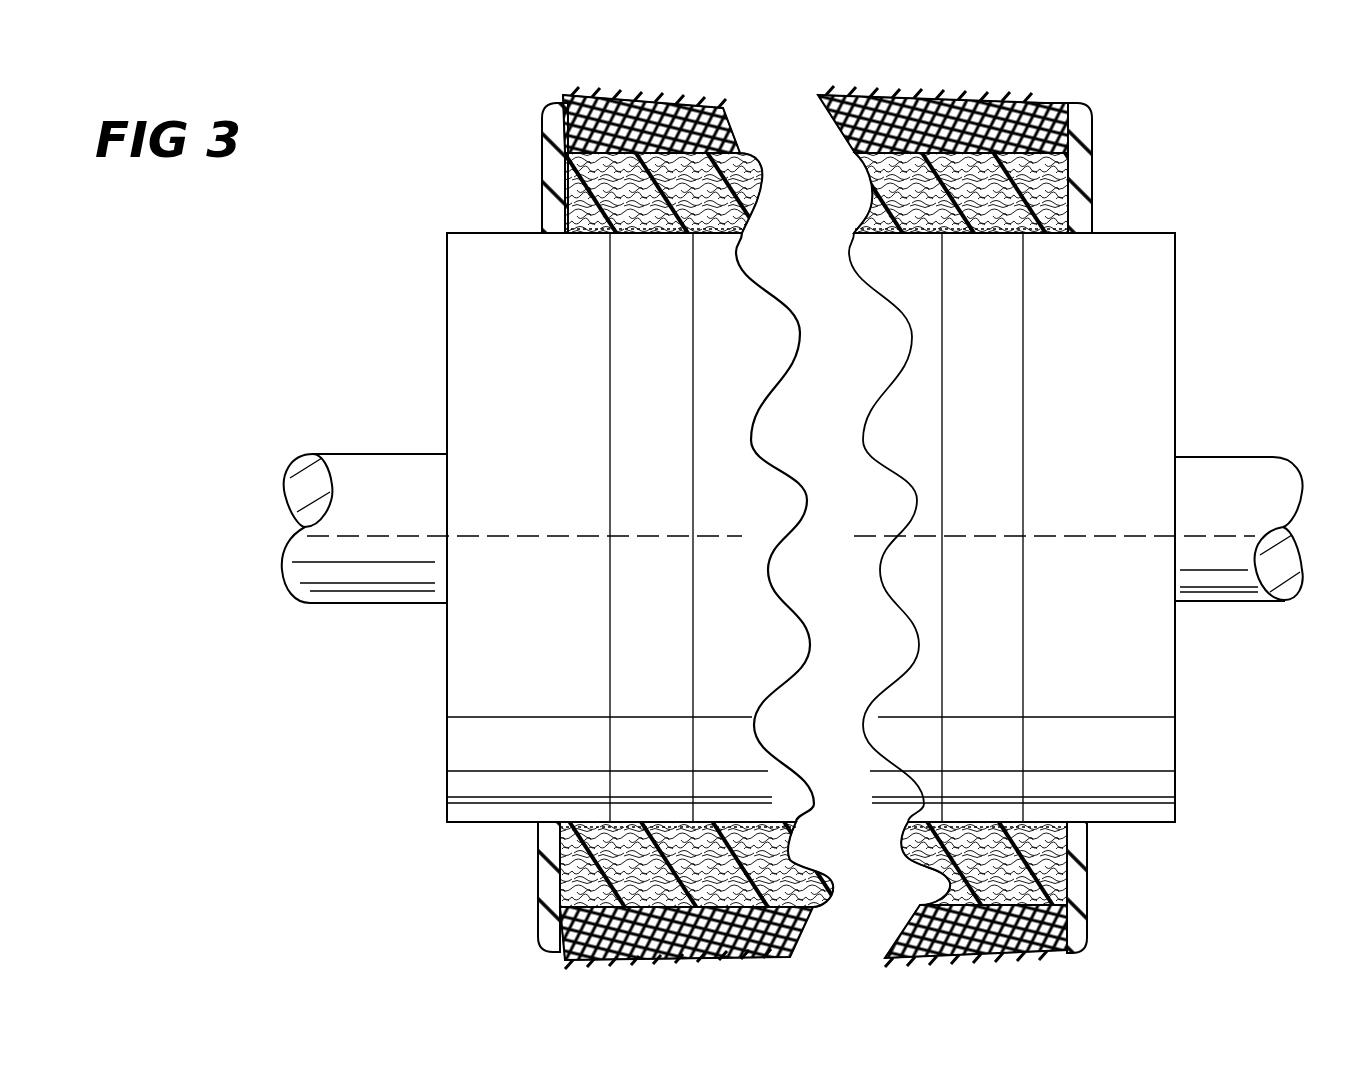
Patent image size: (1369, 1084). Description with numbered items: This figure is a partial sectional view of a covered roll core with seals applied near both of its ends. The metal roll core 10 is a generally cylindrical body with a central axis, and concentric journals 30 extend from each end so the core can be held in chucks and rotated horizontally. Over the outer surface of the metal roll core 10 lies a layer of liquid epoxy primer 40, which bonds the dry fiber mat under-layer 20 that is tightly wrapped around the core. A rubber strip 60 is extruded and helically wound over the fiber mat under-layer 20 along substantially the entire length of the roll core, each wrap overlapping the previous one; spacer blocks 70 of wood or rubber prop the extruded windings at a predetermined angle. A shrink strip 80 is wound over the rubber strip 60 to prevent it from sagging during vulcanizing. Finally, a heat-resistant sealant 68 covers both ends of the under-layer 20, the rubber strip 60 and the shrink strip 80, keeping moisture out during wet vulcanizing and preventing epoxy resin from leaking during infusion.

The metal roll core 10 is at (1115, 288).
The fiber mat under-layer 20 is at (1065, 172).
The journals 30 is at (1200, 468).
The liquid epoxy primer 40 is at (1043, 233).
The rubber strip 60 is at (1040, 102).
The sealant 68 is at (548, 163).
The spacer blocks 70 is at (550, 125).
The shrink strip 80 is at (608, 102).